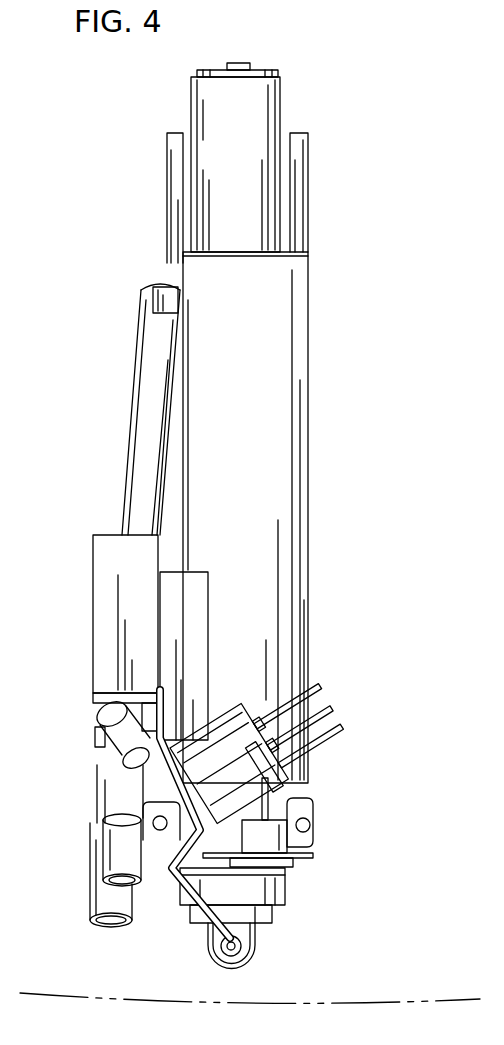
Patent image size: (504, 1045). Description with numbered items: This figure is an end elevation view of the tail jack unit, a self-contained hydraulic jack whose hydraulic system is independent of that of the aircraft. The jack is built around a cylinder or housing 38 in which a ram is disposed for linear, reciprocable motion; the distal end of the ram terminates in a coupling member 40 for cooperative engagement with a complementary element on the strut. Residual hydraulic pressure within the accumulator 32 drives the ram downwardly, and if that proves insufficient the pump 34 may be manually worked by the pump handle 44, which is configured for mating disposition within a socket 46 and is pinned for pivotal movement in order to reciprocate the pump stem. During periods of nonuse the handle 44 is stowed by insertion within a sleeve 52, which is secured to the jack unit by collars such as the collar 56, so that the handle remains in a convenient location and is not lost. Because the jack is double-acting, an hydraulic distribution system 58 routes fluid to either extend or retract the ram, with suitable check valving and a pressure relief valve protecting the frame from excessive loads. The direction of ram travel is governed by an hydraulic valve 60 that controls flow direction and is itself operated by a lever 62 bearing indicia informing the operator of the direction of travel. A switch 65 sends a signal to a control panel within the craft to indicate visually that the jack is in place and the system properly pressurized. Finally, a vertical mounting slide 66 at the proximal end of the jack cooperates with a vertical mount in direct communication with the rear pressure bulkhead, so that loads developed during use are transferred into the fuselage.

The accumulator 32 is at (303, 431).
The pump 34 is at (101, 632).
The cylinder or housing 38 is at (197, 118).
The coupling member 40 is at (250, 946).
The pump handle 44 is at (100, 888).
The socket 46 is at (108, 845).
The sleeve 52 is at (137, 435).
The collar 56 is at (162, 292).
The hydraulic distribution system 58 is at (342, 711).
The hydraulic valve 60 is at (240, 717).
The lever 62 is at (195, 915).
The switch 65 is at (100, 738).
The vertical mounting slide 66 is at (302, 193).